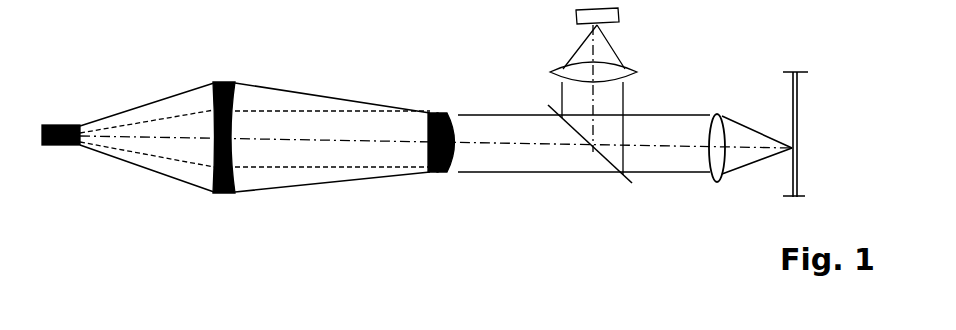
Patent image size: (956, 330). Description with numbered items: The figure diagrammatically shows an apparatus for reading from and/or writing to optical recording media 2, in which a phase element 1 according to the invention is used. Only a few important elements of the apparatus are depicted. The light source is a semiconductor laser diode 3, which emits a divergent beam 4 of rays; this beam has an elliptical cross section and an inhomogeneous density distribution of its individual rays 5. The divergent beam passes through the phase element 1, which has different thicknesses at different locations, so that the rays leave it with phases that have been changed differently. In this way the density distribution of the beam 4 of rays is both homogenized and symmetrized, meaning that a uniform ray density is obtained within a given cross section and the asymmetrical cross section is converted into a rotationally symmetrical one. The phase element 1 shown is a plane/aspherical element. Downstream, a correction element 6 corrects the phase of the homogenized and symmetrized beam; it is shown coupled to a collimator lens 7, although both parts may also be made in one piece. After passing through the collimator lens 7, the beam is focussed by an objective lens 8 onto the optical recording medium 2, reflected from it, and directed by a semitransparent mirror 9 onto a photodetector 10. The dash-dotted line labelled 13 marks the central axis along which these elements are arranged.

The phase element 1 is at (222, 195).
The optical recording medium 2 is at (798, 100).
The semiconductor laser diode 3 is at (55, 147).
The divergent beam of rays 4 is at (148, 113).
The individual rays 5 is at (143, 155).
The correction element 6 is at (431, 173).
The collimator lens 7 is at (447, 176).
The objective lens 8 is at (708, 180).
The semitransparent mirror 9 is at (623, 183).
The photodetector 10 is at (622, 16).
The optical axis 13 is at (327, 138).